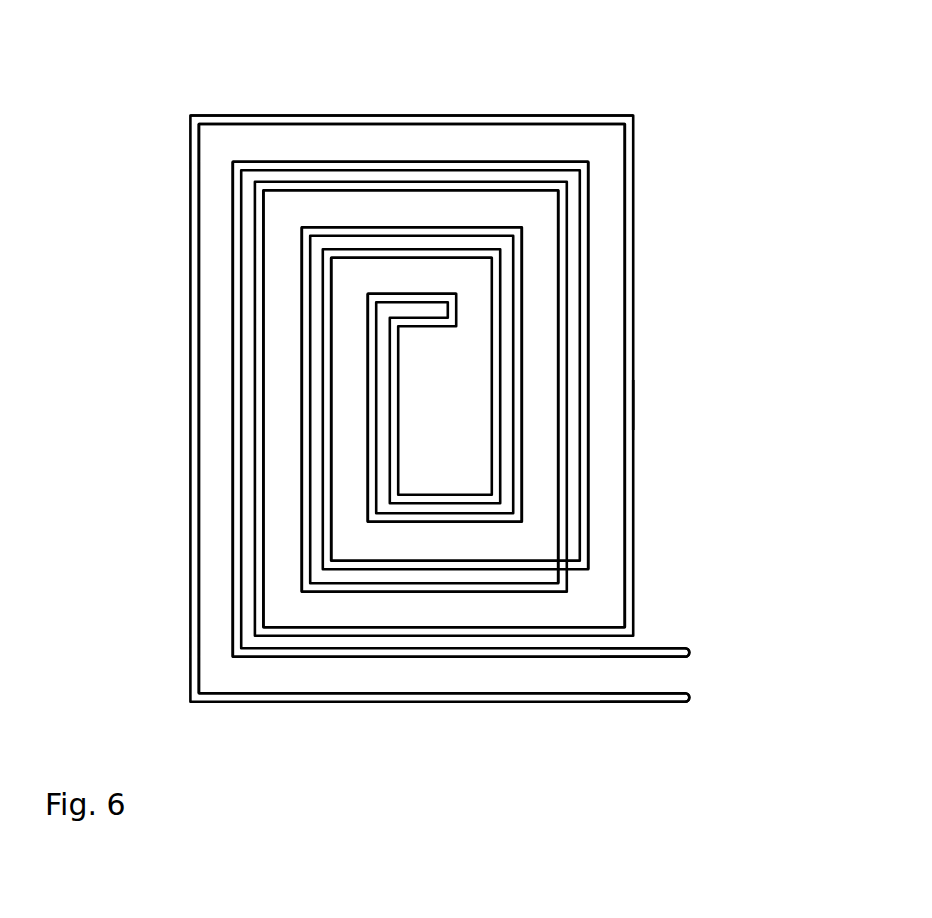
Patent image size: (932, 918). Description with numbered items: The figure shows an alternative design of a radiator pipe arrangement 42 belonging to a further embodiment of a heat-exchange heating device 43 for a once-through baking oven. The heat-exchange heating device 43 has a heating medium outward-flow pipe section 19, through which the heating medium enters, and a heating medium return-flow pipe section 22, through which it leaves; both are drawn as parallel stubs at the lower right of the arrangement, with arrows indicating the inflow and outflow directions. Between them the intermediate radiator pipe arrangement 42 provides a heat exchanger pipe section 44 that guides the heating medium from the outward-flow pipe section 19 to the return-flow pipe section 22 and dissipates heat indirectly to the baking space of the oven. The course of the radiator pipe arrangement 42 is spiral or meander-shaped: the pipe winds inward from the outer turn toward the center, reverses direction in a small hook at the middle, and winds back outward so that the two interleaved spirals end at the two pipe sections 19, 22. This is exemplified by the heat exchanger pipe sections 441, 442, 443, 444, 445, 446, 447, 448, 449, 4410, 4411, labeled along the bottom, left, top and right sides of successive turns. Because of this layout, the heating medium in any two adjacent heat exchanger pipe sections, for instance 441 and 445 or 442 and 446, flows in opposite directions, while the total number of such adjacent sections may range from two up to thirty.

The heating medium outward-flow pipe section 19 is at (692, 698).
The heating medium return-flow pipe section 22 is at (690, 653).
The radiator pipe arrangement 42 is at (460, 112).
The heat-exchange heating device 43 is at (733, 404).
The heat exchanger pipe section 44 is at (628, 483).
The heat exchanger pipe section 441 is at (337, 693).
The heat exchanger pipe section 442 is at (233, 202).
The heat exchanger pipe section 443 is at (513, 162).
The heat exchanger pipe section 444 is at (624, 560).
The heat exchanger pipe section 445 is at (407, 627).
The heat exchanger pipe section 446 is at (301, 258).
The heat exchanger pipe section 447 is at (465, 228).
The heat exchanger pipe section 448 is at (557, 488).
The heat exchanger pipe section 449 is at (453, 561).
The heat exchanger pipe section 4410 is at (367, 303).
The heat exchanger pipe section 4411 is at (420, 294).